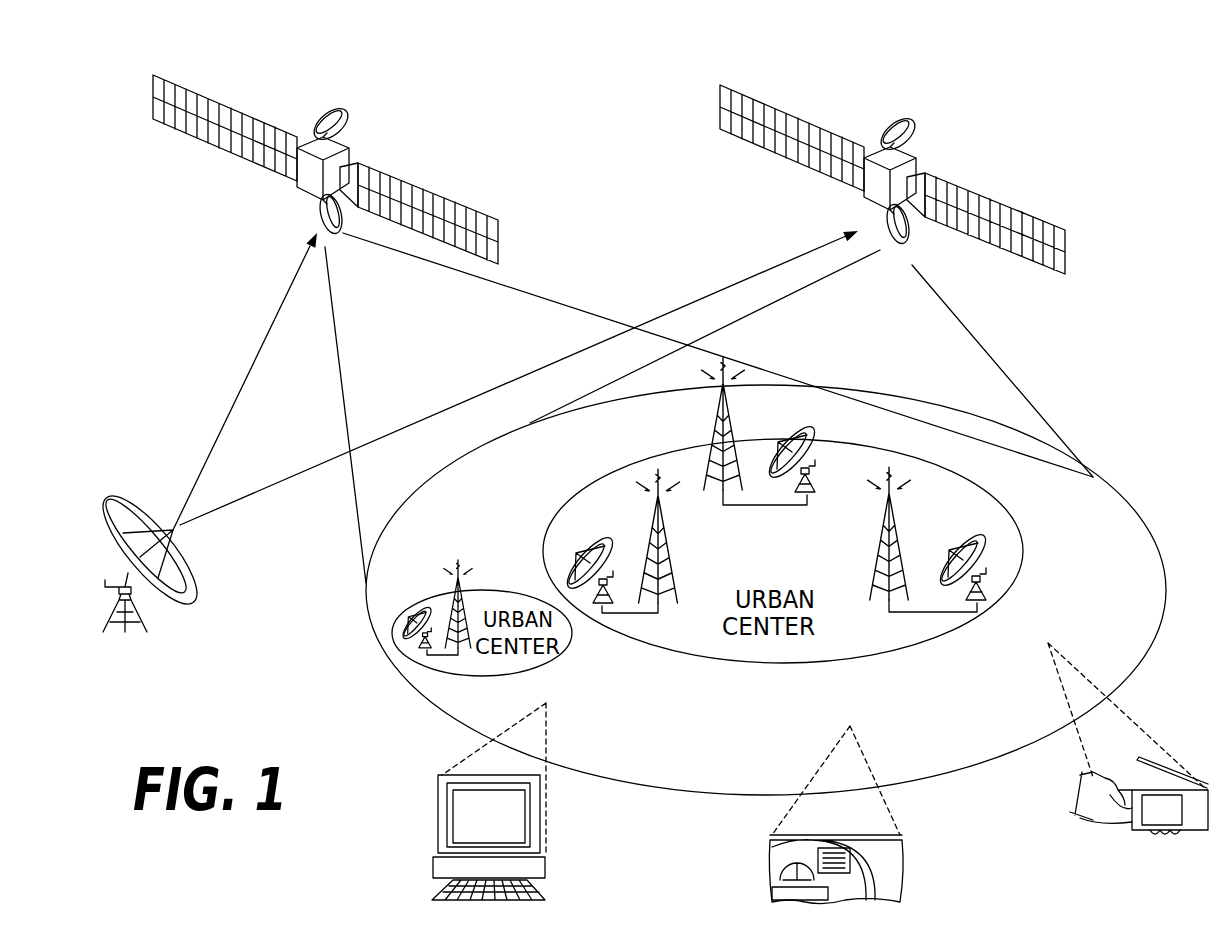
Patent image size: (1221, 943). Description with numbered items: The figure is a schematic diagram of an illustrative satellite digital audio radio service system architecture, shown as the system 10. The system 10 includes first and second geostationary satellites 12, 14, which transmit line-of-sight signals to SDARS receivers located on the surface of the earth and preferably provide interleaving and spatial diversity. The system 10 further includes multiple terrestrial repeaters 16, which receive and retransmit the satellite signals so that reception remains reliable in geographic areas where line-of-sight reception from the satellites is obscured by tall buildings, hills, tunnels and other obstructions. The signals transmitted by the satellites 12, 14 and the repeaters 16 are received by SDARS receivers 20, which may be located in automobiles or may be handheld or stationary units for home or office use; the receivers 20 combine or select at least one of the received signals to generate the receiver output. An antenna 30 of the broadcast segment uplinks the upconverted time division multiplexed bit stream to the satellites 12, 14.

The system 10 is at (636, 232).
The first geostationary satellite 12 is at (448, 198).
The second geostationary satellite 14 is at (1032, 204).
The terrestrial repeaters 16 is at (717, 435).
The SDARS receivers 20 is at (546, 703).
The antenna 30 is at (180, 603).